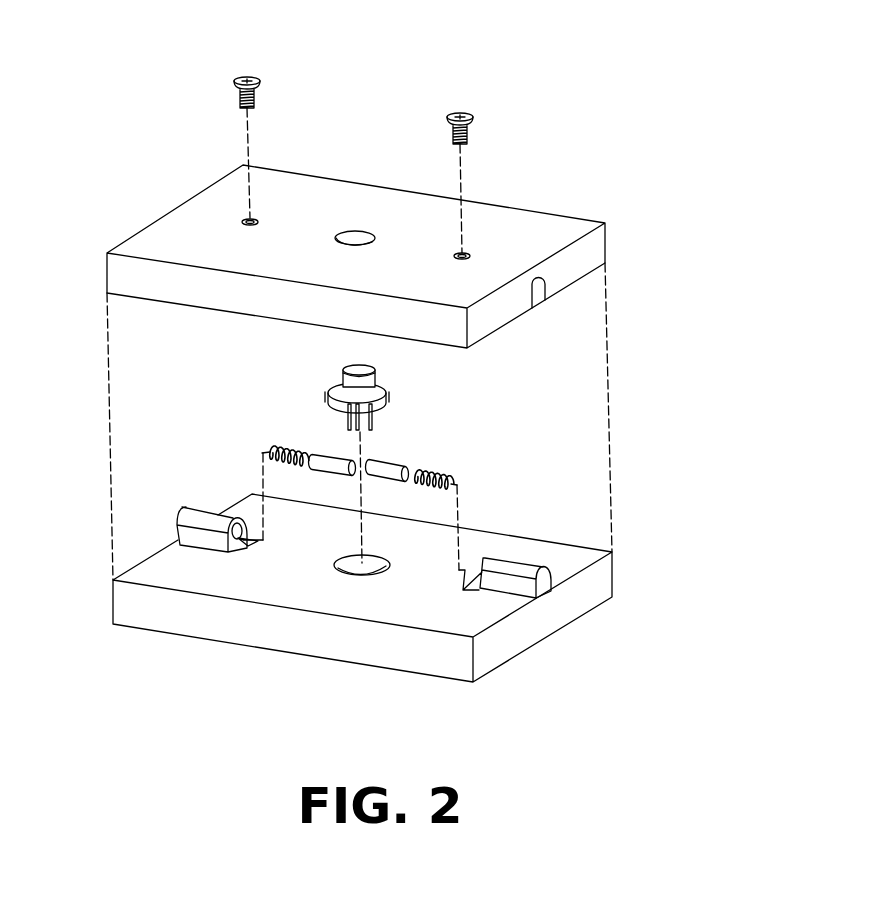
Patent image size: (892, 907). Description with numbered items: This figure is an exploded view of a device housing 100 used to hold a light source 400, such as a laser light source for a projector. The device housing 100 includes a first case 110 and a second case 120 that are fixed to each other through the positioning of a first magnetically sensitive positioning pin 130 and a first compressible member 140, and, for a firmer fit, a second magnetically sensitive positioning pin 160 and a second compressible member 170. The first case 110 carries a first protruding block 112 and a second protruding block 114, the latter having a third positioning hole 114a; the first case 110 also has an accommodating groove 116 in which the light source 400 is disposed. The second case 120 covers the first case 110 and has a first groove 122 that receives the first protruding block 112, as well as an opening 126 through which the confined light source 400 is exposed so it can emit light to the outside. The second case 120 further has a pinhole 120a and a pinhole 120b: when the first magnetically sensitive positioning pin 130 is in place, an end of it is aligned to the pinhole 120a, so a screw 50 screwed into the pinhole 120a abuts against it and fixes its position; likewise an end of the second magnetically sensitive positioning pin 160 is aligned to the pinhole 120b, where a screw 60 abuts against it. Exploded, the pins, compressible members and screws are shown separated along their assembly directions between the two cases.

The device housing 100 is at (797, 567).
The first case 110 is at (602, 578).
The first protruding block 112 is at (513, 570).
The second protruding block 114 is at (182, 532).
The third positioning hole 114a is at (250, 550).
The accommodating groove 116 is at (338, 562).
The second case 120 is at (598, 252).
The pinhole 120a is at (465, 243).
The pinhole 120b is at (253, 208).
The first groove 122 is at (541, 294).
The opening 126 is at (373, 236).
The first magnetically sensitive positioning pin 130 is at (393, 458).
The first compressible member 140 is at (452, 477).
The second magnetically sensitive positioning pin 160 is at (328, 460).
The second compressible member 170 is at (265, 450).
The light source 400 is at (347, 380).
The screw 50 is at (467, 113).
The screw 60 is at (258, 78).